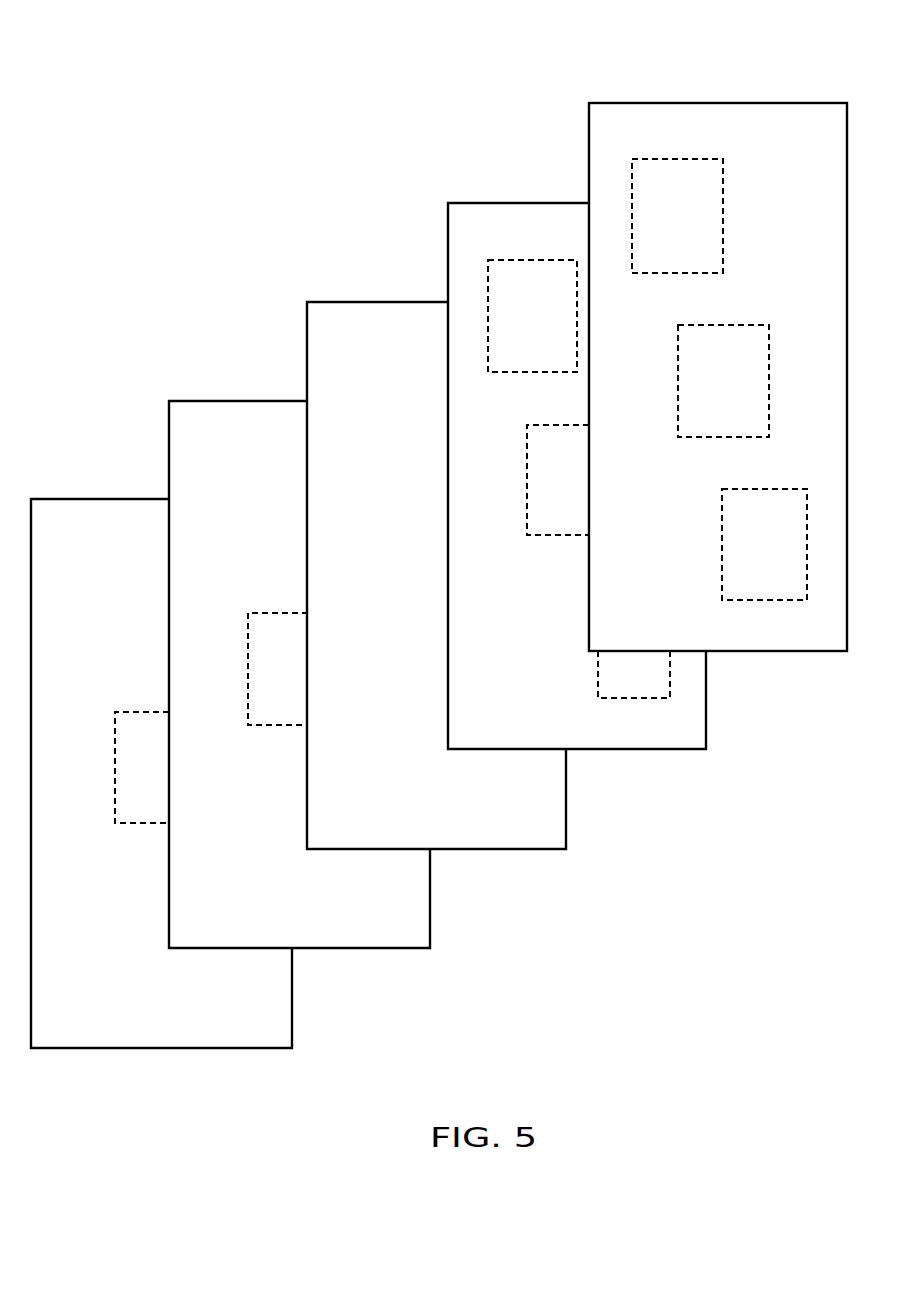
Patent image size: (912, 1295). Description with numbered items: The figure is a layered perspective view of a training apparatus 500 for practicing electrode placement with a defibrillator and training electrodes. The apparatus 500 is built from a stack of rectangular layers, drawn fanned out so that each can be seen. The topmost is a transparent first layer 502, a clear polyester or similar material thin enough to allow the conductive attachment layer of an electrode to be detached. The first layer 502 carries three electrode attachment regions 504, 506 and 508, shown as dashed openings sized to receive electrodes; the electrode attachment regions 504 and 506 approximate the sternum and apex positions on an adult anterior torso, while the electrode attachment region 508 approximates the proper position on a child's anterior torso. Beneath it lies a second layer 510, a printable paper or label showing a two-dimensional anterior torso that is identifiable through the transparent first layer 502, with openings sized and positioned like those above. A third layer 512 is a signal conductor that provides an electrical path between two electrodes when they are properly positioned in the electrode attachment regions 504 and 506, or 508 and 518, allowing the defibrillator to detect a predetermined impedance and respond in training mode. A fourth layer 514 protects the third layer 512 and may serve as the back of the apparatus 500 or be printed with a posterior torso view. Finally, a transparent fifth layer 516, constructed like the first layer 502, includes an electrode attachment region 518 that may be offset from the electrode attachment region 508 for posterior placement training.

The training apparatus 500 is at (267, 53).
The transparent first layer 502 is at (785, 651).
The electrode attachment region 504 is at (723, 197).
The electrode attachment region 506 is at (722, 528).
The electrode attachment region 508 is at (752, 325).
The second layer 510 is at (643, 749).
The third layer 512 is at (517, 849).
The fourth layer 514 is at (388, 948).
The transparent fifth layer 516 is at (202, 1048).
The electrode attachment region 518 is at (253, 613).